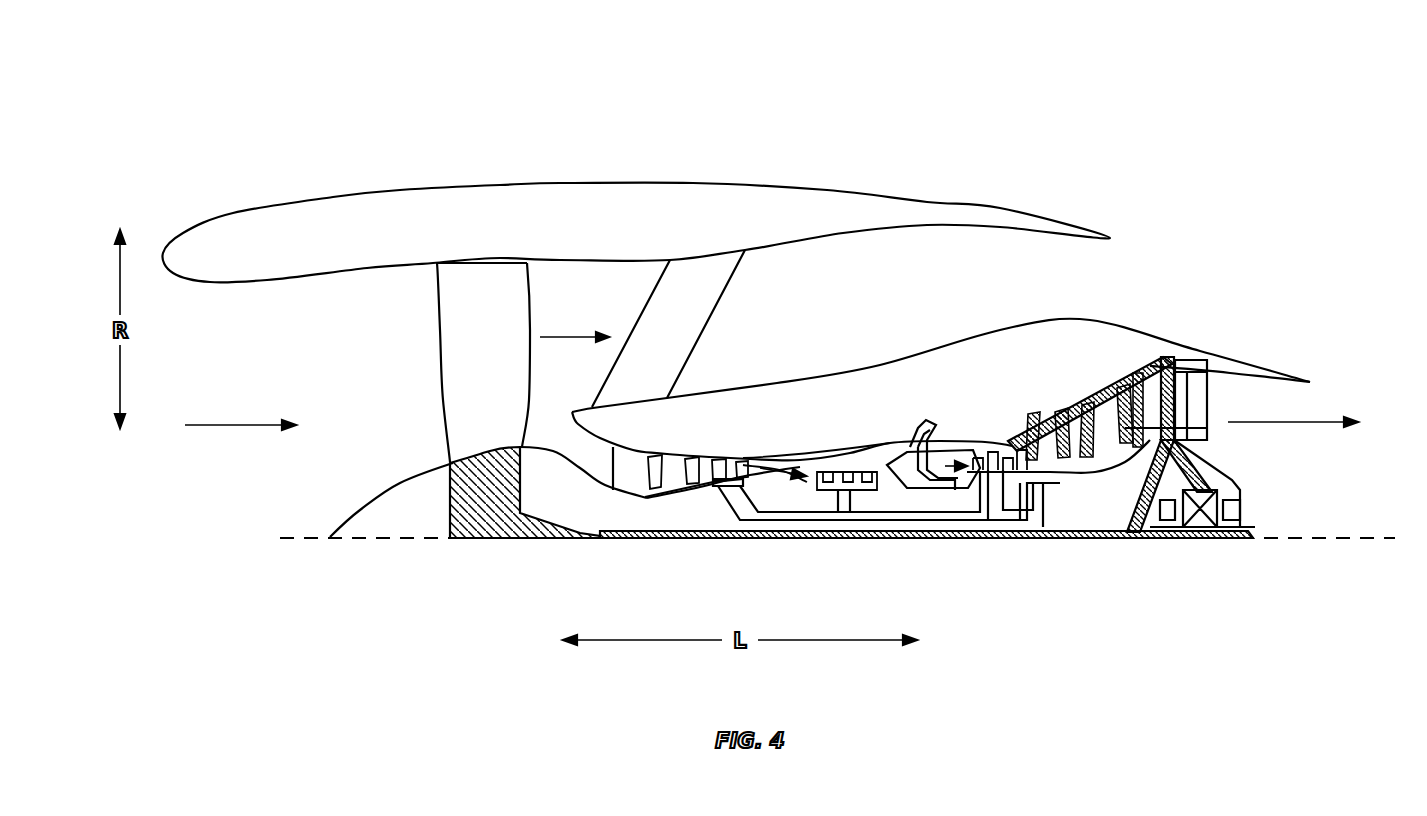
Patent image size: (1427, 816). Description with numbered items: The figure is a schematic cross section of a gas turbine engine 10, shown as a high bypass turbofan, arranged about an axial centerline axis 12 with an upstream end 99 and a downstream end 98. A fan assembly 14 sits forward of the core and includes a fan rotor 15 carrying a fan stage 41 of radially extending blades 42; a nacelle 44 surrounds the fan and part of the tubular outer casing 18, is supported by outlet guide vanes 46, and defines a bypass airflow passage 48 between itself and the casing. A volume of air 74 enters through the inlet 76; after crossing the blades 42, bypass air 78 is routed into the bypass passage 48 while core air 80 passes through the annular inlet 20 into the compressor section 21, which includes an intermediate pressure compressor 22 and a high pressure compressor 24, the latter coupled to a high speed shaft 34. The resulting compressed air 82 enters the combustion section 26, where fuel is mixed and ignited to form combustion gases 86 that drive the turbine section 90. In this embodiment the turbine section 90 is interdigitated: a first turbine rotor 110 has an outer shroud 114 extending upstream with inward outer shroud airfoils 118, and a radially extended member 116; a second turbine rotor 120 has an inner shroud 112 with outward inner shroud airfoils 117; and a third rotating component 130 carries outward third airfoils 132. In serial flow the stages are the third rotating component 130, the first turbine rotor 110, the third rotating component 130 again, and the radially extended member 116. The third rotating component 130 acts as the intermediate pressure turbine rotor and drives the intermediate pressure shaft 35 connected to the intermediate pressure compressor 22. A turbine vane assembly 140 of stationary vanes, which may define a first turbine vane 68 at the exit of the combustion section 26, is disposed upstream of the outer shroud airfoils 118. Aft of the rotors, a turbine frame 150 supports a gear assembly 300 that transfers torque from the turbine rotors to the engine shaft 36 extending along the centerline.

The gas turbine engine 10 is at (1097, 181).
The axial centerline axis 12 is at (1318, 537).
The fan assembly 14 is at (420, 397).
The fan rotor 15 is at (460, 495).
The outer casing 18 is at (880, 370).
The annular inlet 20 is at (555, 431).
The compressor section 21 is at (744, 428).
The intermediate pressure compressor 22 is at (655, 467).
The high pressure compressor 24 is at (822, 476).
The combustion section 26 is at (950, 430).
The high speed shaft 34 is at (818, 515).
The intermediate pressure shaft 35 is at (735, 508).
The engine shaft 36 is at (550, 528).
The fan stage 41 is at (497, 262).
The blades 42 is at (443, 316).
The nacelle 44 is at (390, 207).
The outlet guide vanes 46 is at (648, 343).
The bypass airflow passage 48 is at (789, 331).
The first turbine vane 68 is at (975, 472).
The volume of air 74 is at (248, 427).
The inlet 76 is at (272, 358).
The bypass air 78 is at (563, 337).
The core air 80 is at (535, 430).
The compressed air 82 is at (770, 458).
The combustion gases 86 is at (952, 462).
The turbine section 90 is at (1098, 380).
The downstream end 98 is at (1398, 443).
The upstream end 99 is at (132, 521).
The first turbine rotor 110 is at (1193, 390).
The inner shroud 112 is at (1213, 448).
The outer shroud 114 is at (1052, 405).
The radially extended member 116 is at (1180, 355).
The inner shroud airfoils 117 is at (1108, 383).
The outer shroud airfoils 118 is at (1035, 435).
The second turbine rotor 120 is at (1117, 437).
The third rotating component 130 is at (1035, 483).
The third airfoils 132 is at (1010, 440).
The turbine vane assembly 140 is at (1015, 473).
The turbine frame 150 is at (1200, 403).
The gear assembly 300 is at (1215, 490).